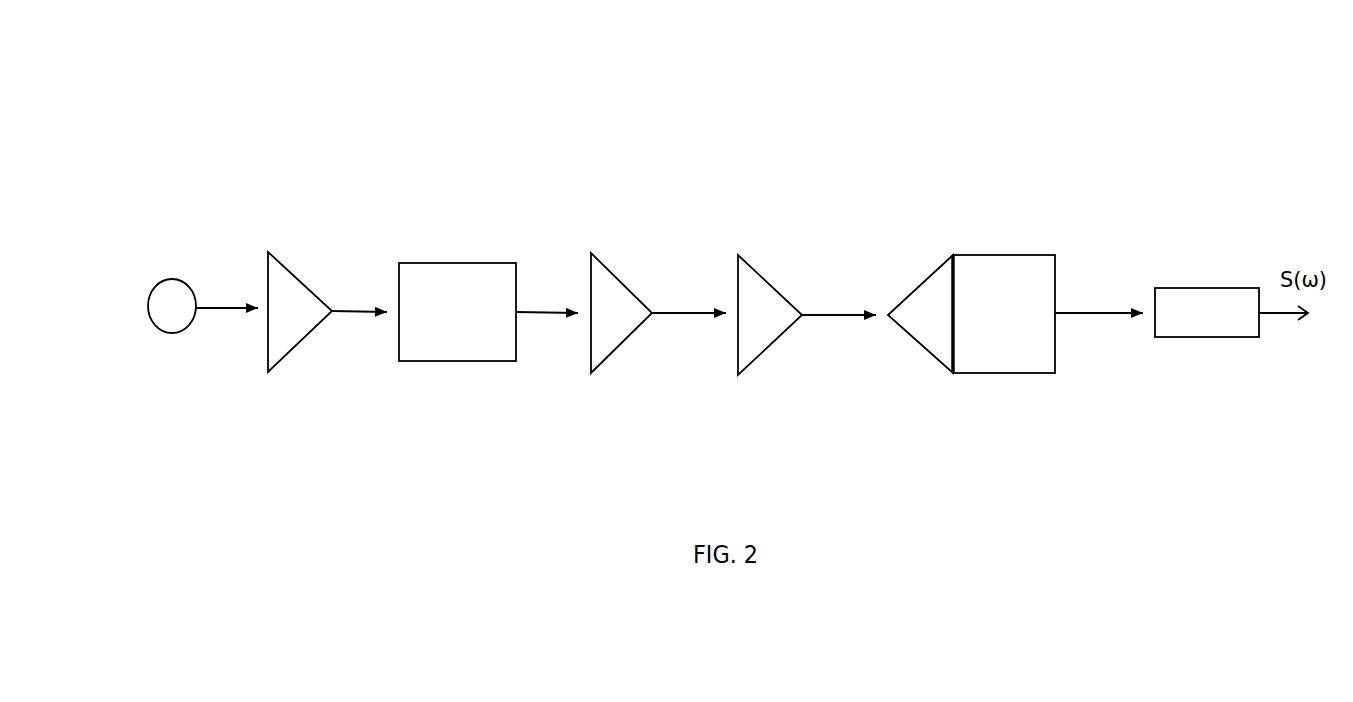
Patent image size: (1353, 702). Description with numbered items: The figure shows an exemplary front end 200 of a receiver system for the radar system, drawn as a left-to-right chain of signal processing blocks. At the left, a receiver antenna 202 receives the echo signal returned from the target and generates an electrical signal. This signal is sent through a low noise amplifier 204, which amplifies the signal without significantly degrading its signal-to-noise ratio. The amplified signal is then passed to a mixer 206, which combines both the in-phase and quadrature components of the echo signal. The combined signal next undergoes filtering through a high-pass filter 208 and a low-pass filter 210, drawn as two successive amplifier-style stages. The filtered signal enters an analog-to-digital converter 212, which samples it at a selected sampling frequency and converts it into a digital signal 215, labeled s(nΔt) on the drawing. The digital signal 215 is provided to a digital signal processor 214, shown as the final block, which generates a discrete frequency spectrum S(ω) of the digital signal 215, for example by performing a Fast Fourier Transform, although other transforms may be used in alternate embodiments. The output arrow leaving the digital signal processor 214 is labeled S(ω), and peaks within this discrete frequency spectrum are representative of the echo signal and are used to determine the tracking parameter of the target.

The front end 200 is at (149, 137).
The receiver antenna 202 is at (172, 285).
The low noise amplifier 204 is at (290, 280).
The mixer 206 is at (440, 272).
The high-pass filter 208 is at (590, 278).
The low-pass filter 210 is at (740, 282).
The analog-to-digital converter 212 is at (988, 270).
The digital signal processor 214 is at (1197, 338).
The digital signal 215 is at (1085, 252).